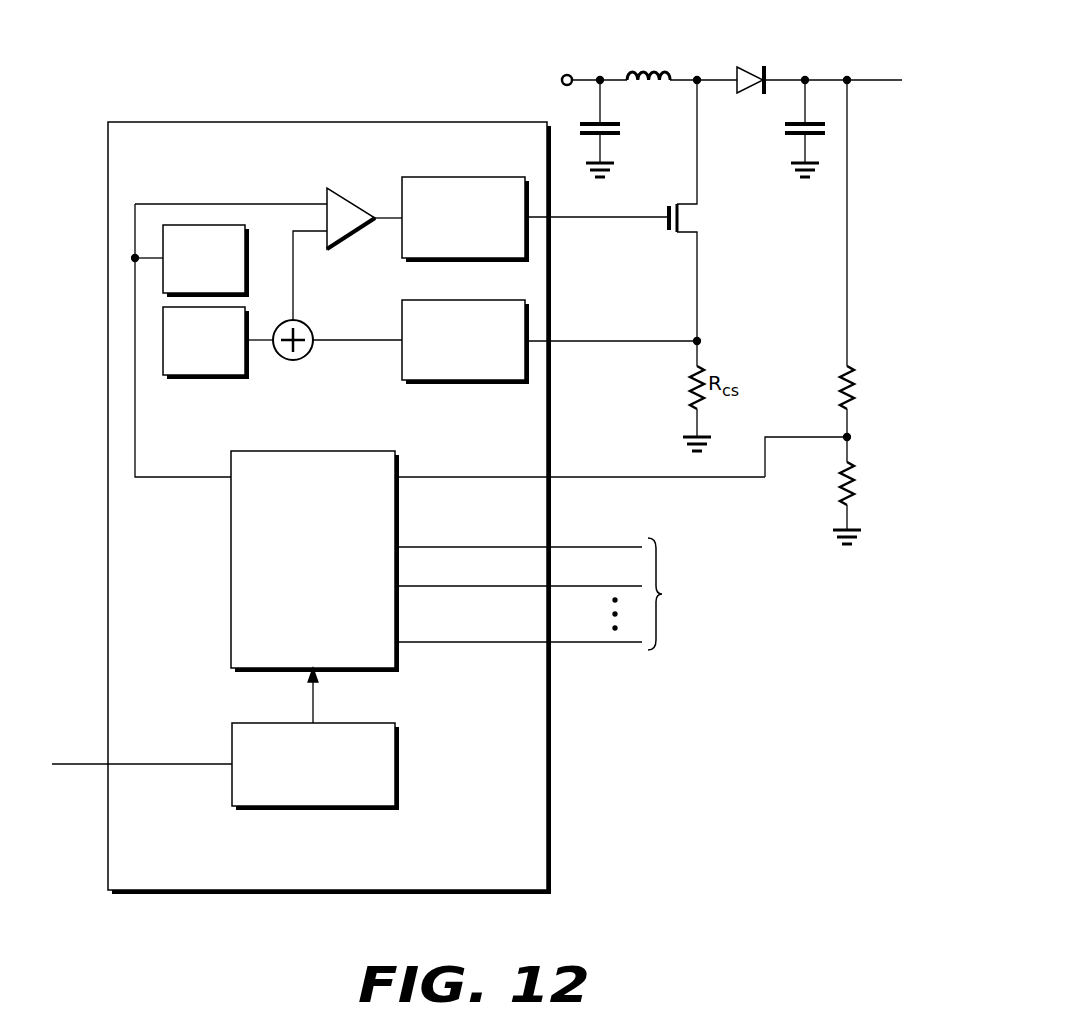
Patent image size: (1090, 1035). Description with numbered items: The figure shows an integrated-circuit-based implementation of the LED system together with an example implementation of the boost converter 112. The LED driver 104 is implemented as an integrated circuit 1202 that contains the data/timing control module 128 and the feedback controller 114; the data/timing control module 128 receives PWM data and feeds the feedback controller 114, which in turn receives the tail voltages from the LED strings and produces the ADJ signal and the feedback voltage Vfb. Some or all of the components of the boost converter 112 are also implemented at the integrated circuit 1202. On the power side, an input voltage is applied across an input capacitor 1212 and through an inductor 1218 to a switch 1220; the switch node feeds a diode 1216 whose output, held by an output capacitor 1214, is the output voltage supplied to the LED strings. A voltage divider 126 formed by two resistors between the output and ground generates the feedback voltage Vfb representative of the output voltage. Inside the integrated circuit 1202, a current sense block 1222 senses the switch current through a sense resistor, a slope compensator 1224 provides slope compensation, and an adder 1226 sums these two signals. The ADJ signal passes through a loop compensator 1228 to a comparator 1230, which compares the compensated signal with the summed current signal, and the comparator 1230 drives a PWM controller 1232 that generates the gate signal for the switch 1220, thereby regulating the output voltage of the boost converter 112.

The boost converter 112 is at (578, 40).
The inductor 1218 is at (672, 72).
The diode 1216 is at (760, 56).
The input capacitor 1212 is at (621, 136).
The output capacitor 1214 is at (790, 136).
The switch 1220 is at (666, 232).
The voltage divider 126 is at (888, 455).
The loop compensator 1228 is at (222, 224).
The slope compensator 1224 is at (215, 378).
The adder 1226 is at (298, 361).
The comparator 1230 is at (352, 202).
The PWM controller 1232 is at (486, 176).
The current sense block 1222 is at (402, 318).
The feedback controller 114 is at (356, 612).
The data/timing control module 128 is at (397, 745).
The LED driver 104 is at (199, 592).
The integrated circuit 1202 is at (459, 875).